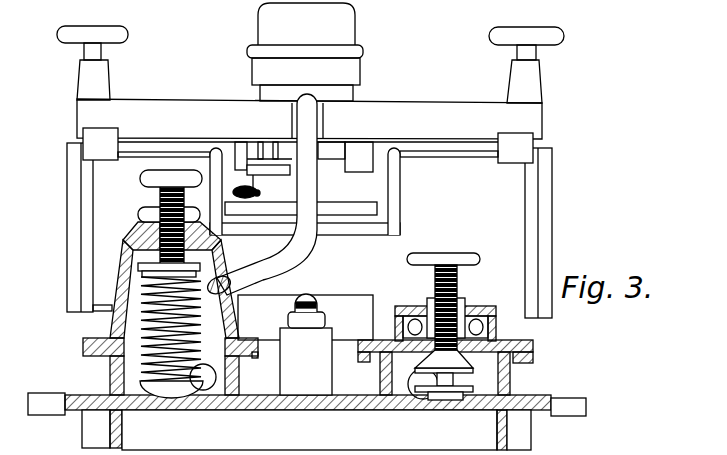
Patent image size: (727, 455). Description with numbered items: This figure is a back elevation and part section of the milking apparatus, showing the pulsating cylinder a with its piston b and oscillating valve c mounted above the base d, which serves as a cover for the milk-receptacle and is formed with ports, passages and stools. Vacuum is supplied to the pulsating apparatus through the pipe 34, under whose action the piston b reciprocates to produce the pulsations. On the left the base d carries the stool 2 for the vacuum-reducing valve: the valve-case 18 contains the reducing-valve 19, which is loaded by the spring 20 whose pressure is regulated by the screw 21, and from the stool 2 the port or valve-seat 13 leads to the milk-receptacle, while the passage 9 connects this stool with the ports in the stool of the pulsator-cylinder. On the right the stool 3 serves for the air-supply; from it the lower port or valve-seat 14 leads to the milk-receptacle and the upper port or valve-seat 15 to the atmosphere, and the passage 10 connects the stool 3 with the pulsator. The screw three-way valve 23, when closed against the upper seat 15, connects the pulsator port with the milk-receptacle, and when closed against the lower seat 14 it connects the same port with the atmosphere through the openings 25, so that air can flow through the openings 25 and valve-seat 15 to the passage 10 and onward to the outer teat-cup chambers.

The pulsating cylinder a is at (310, 210).
The piston b is at (379, 227).
The oscillating valve c is at (337, 38).
The base d is at (542, 408).
The stool 2 is at (110, 371).
The stool 3 is at (507, 371).
The passage 9 is at (217, 375).
The passage 10 is at (415, 378).
The port 13 is at (150, 397).
The port 14 is at (437, 398).
The port 15 is at (465, 352).
The valve-case 18 is at (113, 316).
The reducing-valve 19 is at (187, 390).
The spring 20 is at (143, 318).
The screw 21 is at (160, 190).
The screw three-way valve 23 is at (447, 378).
The openings 25 is at (414, 319).
The pipe 34 is at (307, 122).